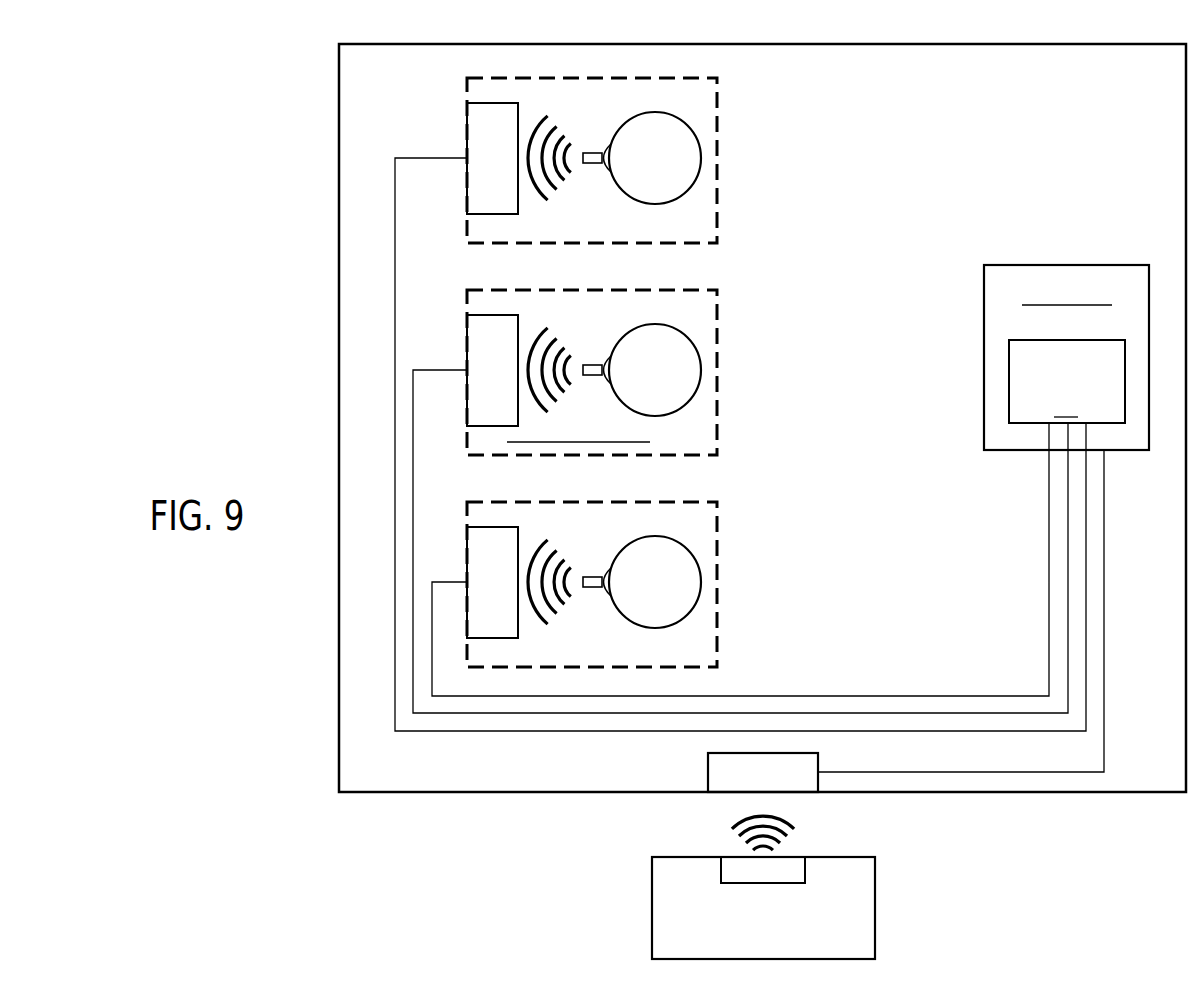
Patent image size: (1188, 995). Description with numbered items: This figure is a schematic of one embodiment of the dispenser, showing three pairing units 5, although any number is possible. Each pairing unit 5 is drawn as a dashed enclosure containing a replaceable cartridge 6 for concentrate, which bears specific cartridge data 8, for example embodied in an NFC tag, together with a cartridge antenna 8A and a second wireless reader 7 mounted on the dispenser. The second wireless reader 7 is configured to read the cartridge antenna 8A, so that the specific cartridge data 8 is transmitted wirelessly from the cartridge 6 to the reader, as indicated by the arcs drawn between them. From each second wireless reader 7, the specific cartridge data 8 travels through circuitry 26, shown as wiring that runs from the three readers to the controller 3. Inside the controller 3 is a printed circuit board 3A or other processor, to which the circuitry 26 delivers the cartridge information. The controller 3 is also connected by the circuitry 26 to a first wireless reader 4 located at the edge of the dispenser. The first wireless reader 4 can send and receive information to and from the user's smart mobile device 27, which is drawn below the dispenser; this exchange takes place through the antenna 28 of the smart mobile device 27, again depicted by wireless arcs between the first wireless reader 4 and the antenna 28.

The controller 3 is at (1065, 265).
The printed circuit board 3A is at (1067, 381).
The first wireless reader 4 is at (706, 772).
The pairing unit 5 is at (719, 158).
The cartridge 6 is at (672, 118).
The second wireless reader 7 is at (519, 370).
The specific cartridge data 8 is at (603, 168).
The cartridge antenna 8A is at (598, 152).
The circuitry 26 is at (432, 663).
The smart mobile device 27 is at (877, 912).
The antenna 28 is at (763, 885).